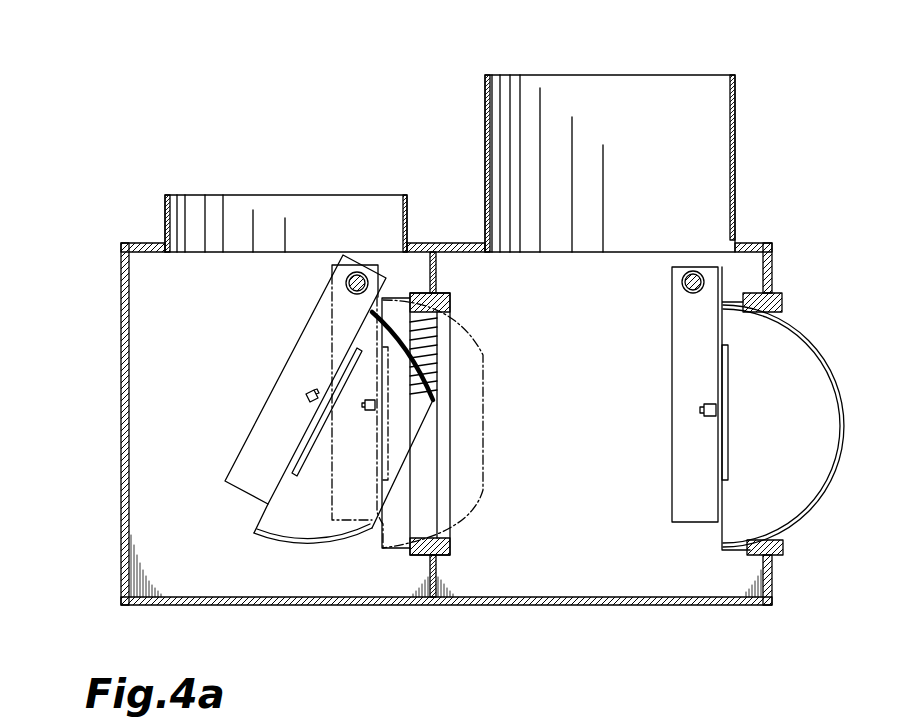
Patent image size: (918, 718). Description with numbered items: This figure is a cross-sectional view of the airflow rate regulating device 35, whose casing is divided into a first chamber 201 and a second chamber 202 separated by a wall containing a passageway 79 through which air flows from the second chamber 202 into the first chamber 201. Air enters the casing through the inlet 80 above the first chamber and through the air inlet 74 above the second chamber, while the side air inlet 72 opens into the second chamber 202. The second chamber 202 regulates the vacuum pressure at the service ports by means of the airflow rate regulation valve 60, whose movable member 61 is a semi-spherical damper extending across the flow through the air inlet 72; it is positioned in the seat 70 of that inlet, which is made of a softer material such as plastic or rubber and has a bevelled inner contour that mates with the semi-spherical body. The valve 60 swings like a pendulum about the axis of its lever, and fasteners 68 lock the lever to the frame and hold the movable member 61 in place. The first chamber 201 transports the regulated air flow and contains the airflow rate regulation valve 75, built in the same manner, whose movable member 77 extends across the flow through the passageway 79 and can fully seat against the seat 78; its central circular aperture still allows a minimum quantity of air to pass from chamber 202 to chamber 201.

The airflow rate regulating device 35 is at (126, 141).
The first inlet duct 80 is at (217, 218).
The air inlet 74 is at (667, 92).
The fasteners 68 is at (343, 268).
The first chamber 201 is at (201, 376).
The second chamber 202 is at (586, 376).
The airflow rate regulation valve 75 is at (329, 399).
The movable member 77 is at (437, 373).
The seat 78 is at (450, 553).
The passageway 79 is at (497, 468).
The airflow rate regulation valve 60 is at (711, 408).
The movable member 61 is at (783, 426).
The air inlet 72 is at (810, 326).
The seat 70 is at (785, 545).